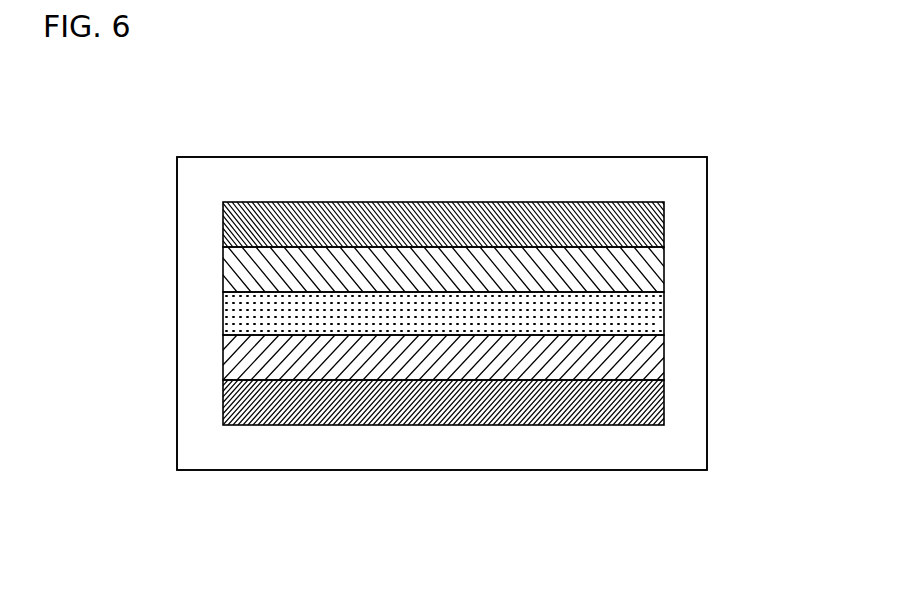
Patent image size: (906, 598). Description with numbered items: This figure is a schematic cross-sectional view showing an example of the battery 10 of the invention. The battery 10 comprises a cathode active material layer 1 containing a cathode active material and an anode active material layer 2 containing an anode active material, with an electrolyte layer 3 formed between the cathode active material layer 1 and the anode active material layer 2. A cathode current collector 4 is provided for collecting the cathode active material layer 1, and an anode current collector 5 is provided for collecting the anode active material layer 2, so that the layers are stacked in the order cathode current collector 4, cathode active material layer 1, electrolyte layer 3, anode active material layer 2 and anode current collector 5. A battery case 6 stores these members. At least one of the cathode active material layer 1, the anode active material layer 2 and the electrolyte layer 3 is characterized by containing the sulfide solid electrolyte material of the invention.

The battery 10 is at (691, 106).
The battery case 6 is at (685, 174).
The cathode current collector 4 is at (665, 213).
The cathode active material layer 1 is at (665, 258).
The electrolyte layer 3 is at (652, 303).
The anode active material layer 2 is at (660, 347).
The anode current collector 5 is at (665, 390).